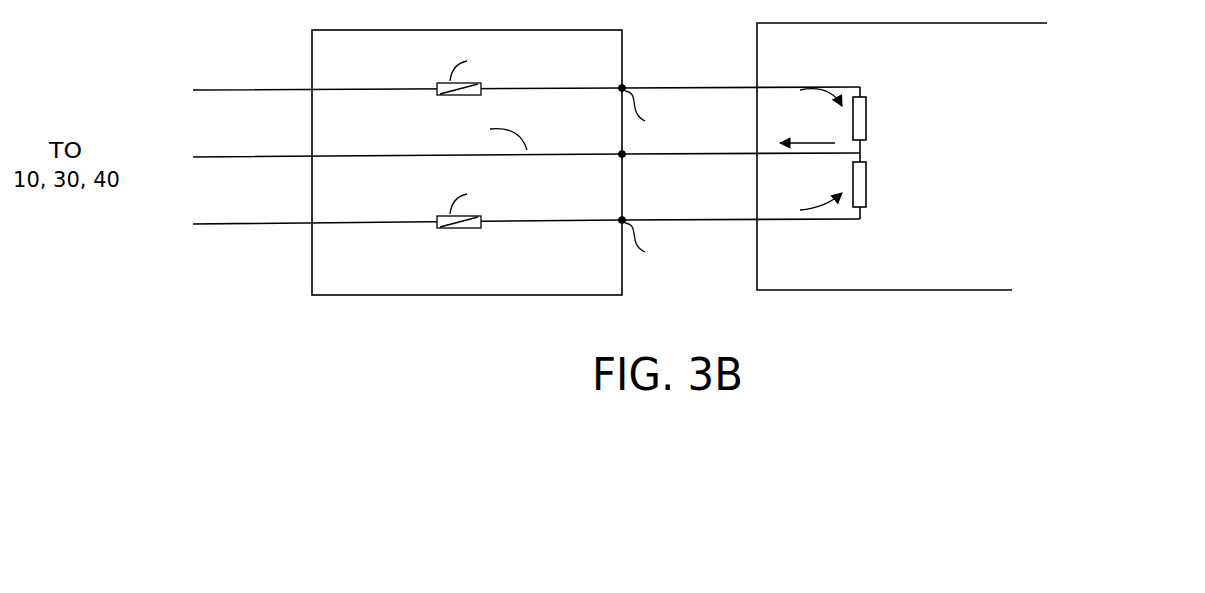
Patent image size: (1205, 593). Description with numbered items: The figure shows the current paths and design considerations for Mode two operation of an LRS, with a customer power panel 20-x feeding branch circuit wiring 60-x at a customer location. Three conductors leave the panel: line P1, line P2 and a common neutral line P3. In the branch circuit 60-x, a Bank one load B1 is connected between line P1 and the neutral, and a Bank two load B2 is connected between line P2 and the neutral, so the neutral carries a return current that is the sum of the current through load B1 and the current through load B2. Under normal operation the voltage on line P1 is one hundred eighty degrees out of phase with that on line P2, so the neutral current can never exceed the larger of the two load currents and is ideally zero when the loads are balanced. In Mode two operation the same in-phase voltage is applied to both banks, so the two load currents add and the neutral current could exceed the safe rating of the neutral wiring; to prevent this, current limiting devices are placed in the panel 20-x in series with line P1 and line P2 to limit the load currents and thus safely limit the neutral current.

The customer power panel 20-x is at (646, 31).
The branch circuit wiring 60-x is at (968, 156).
The line P1 is at (257, 88).
The line P2 is at (257, 222).
The neutral conductor P3 is at (257, 155).
The Bank 1 120 VAC load B1 is at (867, 133).
The Bank 2 120 VAC load B2 is at (867, 193).